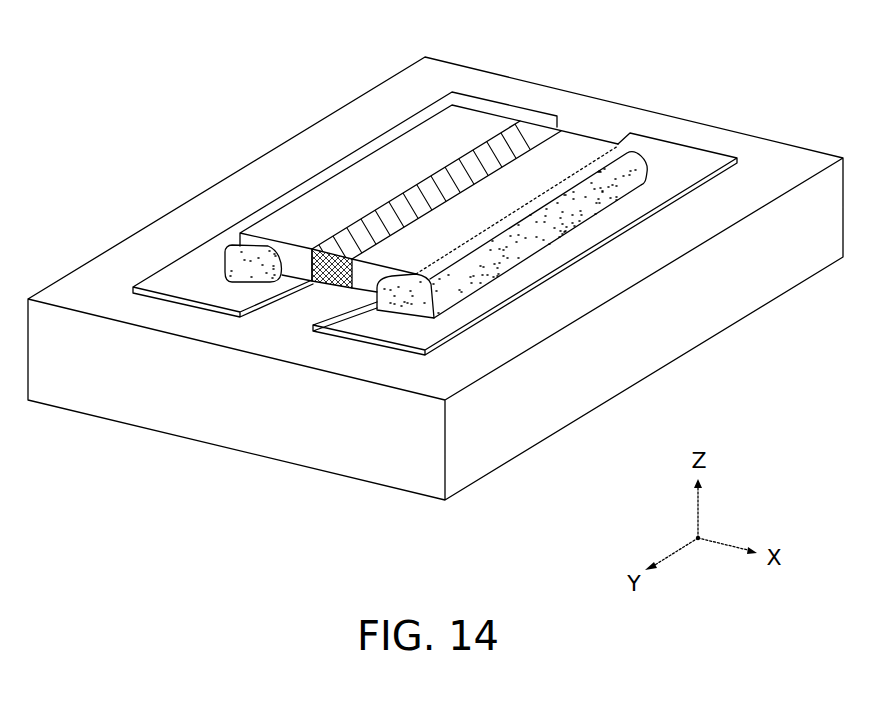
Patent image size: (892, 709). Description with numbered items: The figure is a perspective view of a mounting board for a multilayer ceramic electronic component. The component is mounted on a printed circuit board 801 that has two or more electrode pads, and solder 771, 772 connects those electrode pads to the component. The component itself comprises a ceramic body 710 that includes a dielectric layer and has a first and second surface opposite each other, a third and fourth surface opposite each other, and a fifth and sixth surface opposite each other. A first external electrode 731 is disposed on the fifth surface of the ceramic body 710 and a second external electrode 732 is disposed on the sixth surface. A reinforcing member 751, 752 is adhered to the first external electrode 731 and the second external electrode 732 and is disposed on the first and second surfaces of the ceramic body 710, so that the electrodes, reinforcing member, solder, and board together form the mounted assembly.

The printed circuit board 801 is at (720, 297).
The first external electrode 731 is at (482, 127).
The second external electrode 732 is at (590, 140).
The reinforcing member 751 is at (527, 130).
The ceramic body 710 is at (313, 283).
The reinforcing member 752 is at (331, 281).
The solder 771 is at (243, 266).
The solder 772 is at (527, 245).